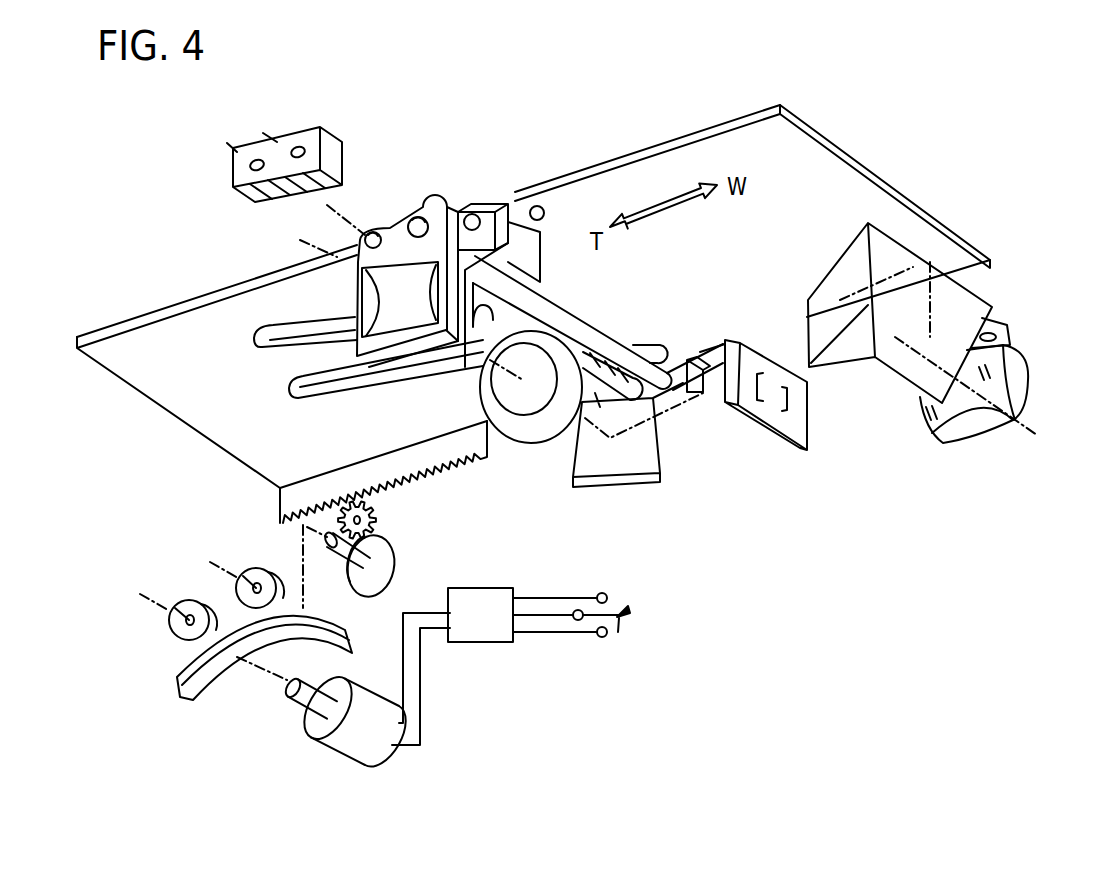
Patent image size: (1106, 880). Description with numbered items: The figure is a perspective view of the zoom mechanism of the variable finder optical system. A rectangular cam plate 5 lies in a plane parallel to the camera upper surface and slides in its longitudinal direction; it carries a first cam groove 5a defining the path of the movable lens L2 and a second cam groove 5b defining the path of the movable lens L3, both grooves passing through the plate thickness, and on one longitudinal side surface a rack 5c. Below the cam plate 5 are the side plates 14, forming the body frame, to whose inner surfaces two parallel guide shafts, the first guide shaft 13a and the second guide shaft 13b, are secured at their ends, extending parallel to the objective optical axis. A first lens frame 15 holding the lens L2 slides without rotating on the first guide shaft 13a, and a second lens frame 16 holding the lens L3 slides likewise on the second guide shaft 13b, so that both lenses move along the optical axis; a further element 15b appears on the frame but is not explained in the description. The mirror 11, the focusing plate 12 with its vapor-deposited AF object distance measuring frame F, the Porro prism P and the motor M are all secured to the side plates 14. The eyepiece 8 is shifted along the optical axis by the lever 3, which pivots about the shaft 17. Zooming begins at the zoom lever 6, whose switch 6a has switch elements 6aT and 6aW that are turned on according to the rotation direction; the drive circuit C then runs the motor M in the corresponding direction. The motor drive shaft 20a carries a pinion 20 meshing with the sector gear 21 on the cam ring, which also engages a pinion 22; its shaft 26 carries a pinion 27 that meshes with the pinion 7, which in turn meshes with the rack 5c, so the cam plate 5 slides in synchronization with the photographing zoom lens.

The lever 3 is at (1002, 317).
The cam plate 5 is at (877, 200).
The first cam groove 5a is at (252, 333).
The second cam groove 5b is at (290, 390).
The rack 5c is at (287, 503).
The zoom lever 6 is at (623, 600).
The switch 6a is at (627, 608).
The switch element 6aT is at (597, 596).
The switch element 6aW is at (600, 637).
The pinion 7 is at (378, 512).
The eyepiece 8 is at (1015, 388).
The mirror 11 is at (637, 480).
The focusing plate 12 is at (782, 427).
The first guide shaft 13a is at (427, 200).
The second guide shaft 13b is at (377, 215).
The side plates 14 is at (290, 135).
The first lens frame 15 is at (347, 295).
The pin hole 15b is at (530, 213).
The second lens frame 16 is at (543, 433).
The pivot shaft 17 is at (1005, 333).
The pinion 20 is at (178, 636).
The drive shaft 20a is at (307, 707).
The sector gear 21 is at (210, 683).
The pinion 22 is at (238, 596).
The shaft 26 is at (337, 562).
The pinion 27 is at (397, 567).
The drive circuit C is at (475, 632).
The AF object distance measuring frame F is at (783, 402).
The movable lens L2 is at (393, 322).
The movable lens L3 is at (527, 407).
The motor M is at (380, 748).
The Porro prism P is at (962, 315).